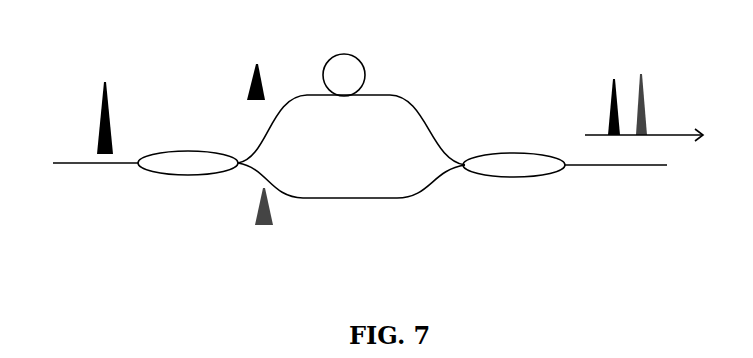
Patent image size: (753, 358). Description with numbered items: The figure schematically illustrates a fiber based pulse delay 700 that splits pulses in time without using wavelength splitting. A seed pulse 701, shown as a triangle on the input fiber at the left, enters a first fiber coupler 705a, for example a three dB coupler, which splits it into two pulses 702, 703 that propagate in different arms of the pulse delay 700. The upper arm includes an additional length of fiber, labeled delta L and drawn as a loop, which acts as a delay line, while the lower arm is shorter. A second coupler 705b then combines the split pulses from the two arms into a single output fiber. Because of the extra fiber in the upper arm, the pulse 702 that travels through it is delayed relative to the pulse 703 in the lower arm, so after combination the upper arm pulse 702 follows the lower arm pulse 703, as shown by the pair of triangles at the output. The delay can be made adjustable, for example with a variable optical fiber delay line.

The pulse delay 700 is at (352, 160).
The seed pulse 701 is at (107, 93).
The split pulse 702 is at (264, 70).
The split pulse 703 is at (270, 209).
The first fiber coupler 705a is at (190, 175).
The second coupler 705b is at (517, 152).